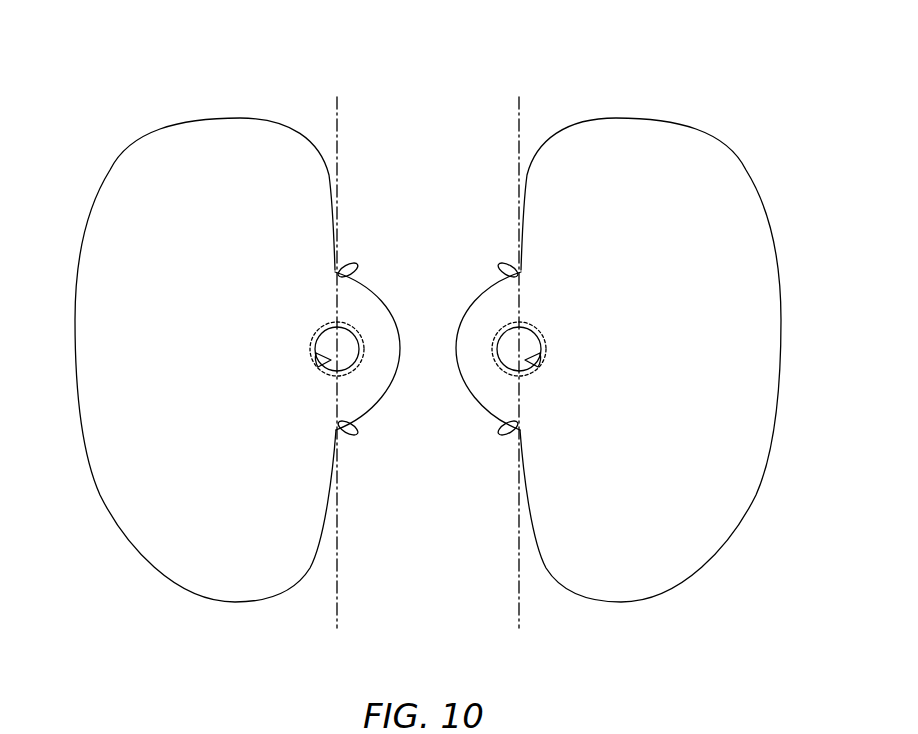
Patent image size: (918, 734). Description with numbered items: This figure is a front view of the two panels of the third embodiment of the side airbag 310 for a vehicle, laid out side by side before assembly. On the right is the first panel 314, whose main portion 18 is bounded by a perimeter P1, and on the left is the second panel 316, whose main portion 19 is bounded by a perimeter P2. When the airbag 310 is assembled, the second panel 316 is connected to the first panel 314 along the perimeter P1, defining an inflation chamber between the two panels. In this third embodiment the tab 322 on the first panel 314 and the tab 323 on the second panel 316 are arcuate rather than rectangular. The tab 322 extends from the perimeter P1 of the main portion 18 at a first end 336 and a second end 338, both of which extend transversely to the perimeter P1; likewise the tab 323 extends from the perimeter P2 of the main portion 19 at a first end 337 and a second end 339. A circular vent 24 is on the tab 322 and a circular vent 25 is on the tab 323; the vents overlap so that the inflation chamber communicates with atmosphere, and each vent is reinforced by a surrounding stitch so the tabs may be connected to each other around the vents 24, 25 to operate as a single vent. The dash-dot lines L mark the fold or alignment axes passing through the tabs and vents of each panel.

The airbag 310 is at (775, 96).
The first panel 314 is at (758, 418).
The second panel 316 is at (97, 417).
The main portion 18 is at (755, 312).
The main portion 19 is at (100, 318).
The perimeter P1 is at (750, 172).
The perimeter P2 is at (112, 170).
The tab 322 is at (471, 312).
The tab 323 is at (385, 312).
The first end 336 is at (511, 272).
The first end 337 is at (345, 272).
The second end 338 is at (511, 430).
The second end 339 is at (345, 430).
The vent 24 is at (549, 352).
The vent 25 is at (320, 356).
The axis line L is at (426, 376).